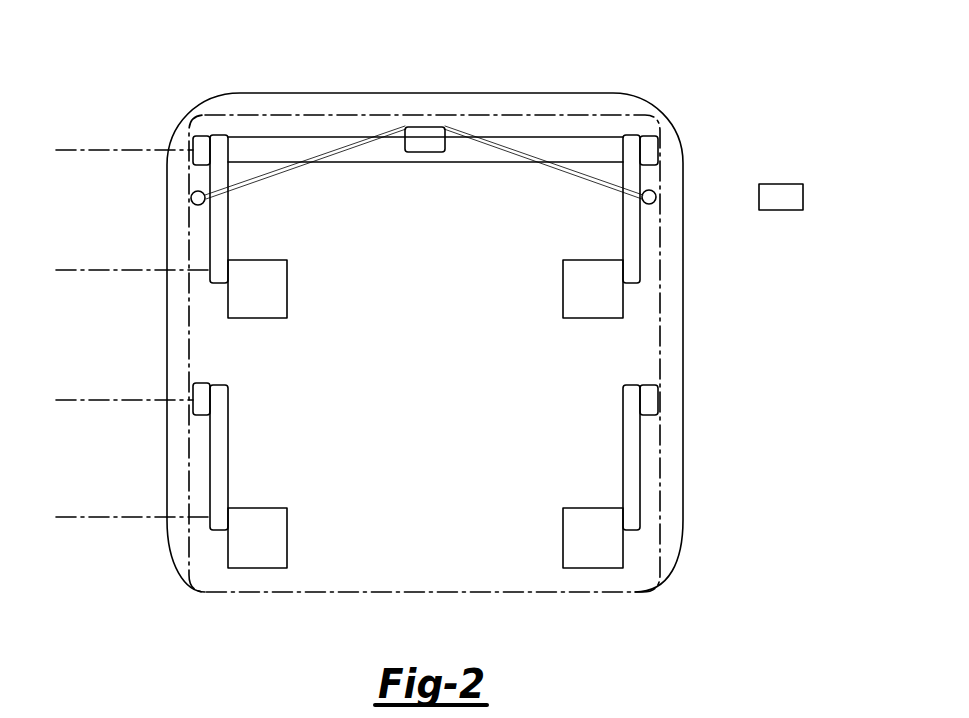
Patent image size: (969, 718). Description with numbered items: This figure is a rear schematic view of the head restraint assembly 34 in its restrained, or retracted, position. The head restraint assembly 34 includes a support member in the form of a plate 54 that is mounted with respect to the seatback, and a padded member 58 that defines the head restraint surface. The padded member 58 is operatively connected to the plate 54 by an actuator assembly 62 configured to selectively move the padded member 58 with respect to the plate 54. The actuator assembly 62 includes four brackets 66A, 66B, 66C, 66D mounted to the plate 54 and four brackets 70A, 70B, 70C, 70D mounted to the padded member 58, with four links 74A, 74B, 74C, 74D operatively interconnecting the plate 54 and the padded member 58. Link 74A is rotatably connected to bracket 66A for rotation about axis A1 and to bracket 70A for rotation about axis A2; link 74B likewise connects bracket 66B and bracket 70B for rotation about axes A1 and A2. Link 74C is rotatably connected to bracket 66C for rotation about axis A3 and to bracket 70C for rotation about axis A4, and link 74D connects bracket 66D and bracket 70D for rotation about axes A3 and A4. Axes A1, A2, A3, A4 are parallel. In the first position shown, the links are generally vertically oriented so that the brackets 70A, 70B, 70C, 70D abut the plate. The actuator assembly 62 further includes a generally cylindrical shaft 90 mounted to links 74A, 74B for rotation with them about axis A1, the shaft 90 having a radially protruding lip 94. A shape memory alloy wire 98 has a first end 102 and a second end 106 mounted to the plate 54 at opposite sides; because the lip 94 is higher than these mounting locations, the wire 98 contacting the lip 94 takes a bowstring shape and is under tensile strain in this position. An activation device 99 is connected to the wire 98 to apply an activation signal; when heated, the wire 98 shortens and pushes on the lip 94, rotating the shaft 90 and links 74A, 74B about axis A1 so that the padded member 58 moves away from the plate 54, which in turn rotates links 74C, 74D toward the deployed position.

The head restraint assembly 34 is at (126, 60).
The plate 54 is at (325, 590).
The padded member 58 is at (343, 105).
The actuator assembly 62 is at (394, 118).
The bracket 66A is at (200, 142).
The bracket 66B is at (651, 147).
The bracket 66C is at (196, 393).
The bracket 66D is at (648, 398).
The bracket 70A is at (287, 290).
The bracket 70B is at (563, 290).
The bracket 70C is at (287, 535).
The bracket 70D is at (563, 538).
The link 74A is at (220, 237).
The link 74B is at (632, 272).
The link 74C is at (220, 455).
The link 74D is at (632, 510).
The shaft 90 is at (533, 143).
The lip 94 is at (424, 137).
The shape memory alloy wire 98 is at (265, 178).
The activation device 99 is at (656, 196).
The first end 102 is at (191, 198).
The second end 106 is at (655, 200).
The axis A1 is at (112, 150).
The axis A2 is at (120, 270).
The axis A3 is at (112, 402).
The axis A4 is at (120, 519).